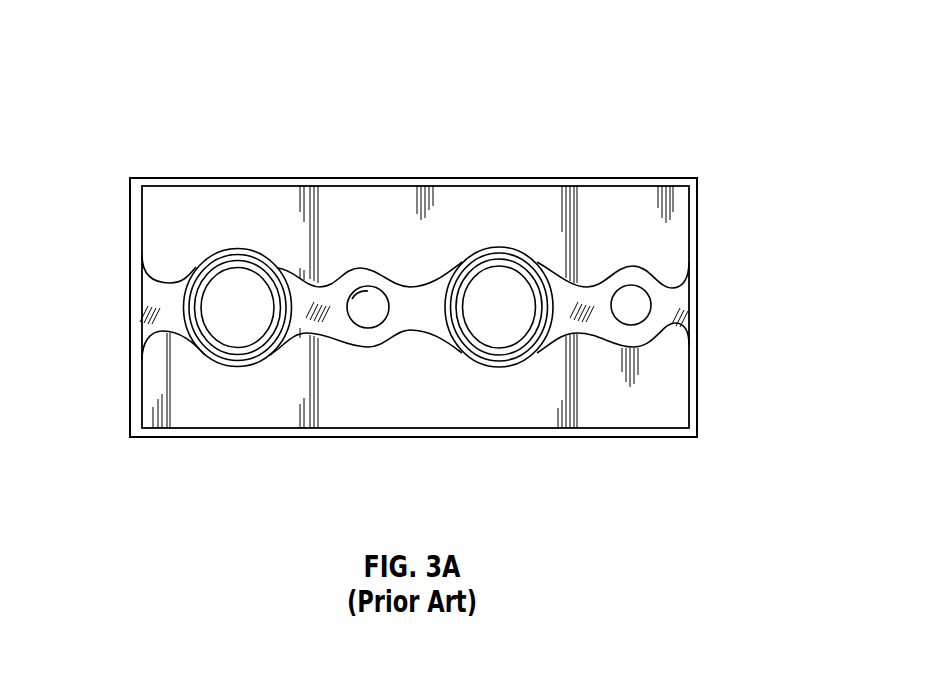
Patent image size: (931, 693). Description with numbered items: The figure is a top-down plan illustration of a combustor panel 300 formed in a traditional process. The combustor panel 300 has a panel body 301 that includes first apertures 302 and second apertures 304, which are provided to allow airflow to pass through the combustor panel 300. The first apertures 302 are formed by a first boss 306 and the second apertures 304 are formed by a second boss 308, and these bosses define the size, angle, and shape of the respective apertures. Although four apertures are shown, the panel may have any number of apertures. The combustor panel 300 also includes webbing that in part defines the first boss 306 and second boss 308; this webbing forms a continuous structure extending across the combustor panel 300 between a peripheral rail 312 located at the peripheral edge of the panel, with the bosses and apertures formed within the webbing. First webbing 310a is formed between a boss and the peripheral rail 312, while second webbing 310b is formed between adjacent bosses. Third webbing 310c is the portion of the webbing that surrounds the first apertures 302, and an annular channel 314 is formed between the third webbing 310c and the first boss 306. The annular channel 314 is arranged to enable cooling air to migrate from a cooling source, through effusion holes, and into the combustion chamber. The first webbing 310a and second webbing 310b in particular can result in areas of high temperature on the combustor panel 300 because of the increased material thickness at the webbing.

The combustor panel 300 is at (652, 50).
The panel body 301 is at (670, 403).
The first apertures 302 is at (237, 290).
The second apertures 304 is at (376, 294).
The first boss 306 is at (215, 338).
The second boss 308 is at (368, 291).
The first webbing 310a is at (160, 297).
The second webbing 310b is at (406, 305).
The third webbing 310c is at (215, 358).
The peripheral rail 312 is at (177, 436).
The annular channel 314 is at (189, 266).